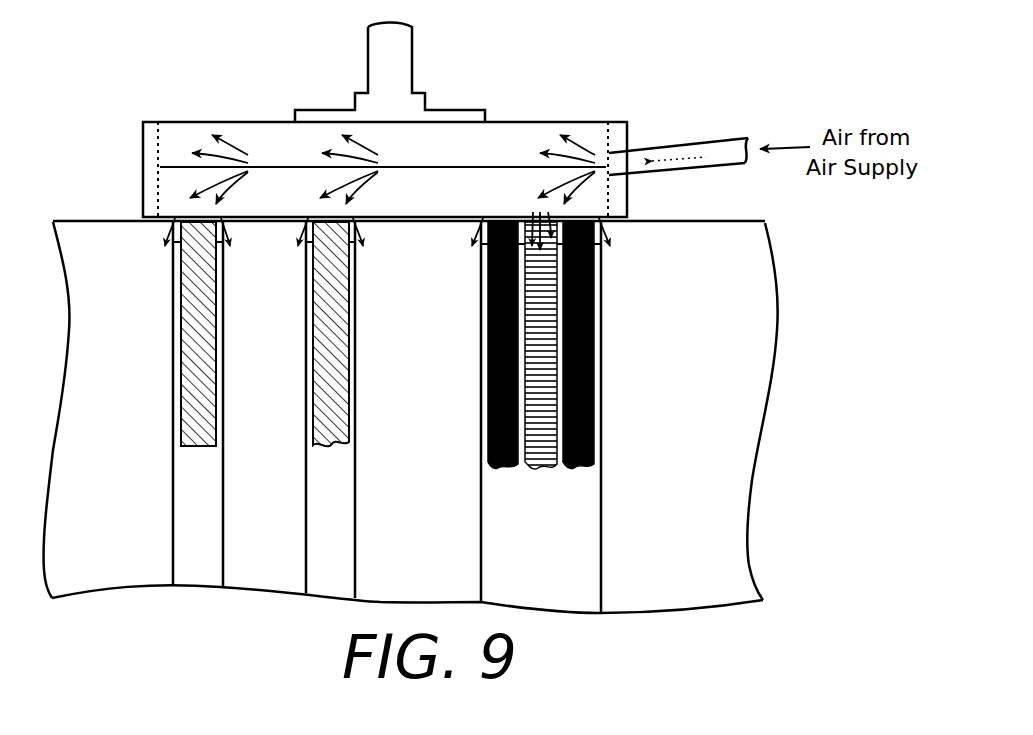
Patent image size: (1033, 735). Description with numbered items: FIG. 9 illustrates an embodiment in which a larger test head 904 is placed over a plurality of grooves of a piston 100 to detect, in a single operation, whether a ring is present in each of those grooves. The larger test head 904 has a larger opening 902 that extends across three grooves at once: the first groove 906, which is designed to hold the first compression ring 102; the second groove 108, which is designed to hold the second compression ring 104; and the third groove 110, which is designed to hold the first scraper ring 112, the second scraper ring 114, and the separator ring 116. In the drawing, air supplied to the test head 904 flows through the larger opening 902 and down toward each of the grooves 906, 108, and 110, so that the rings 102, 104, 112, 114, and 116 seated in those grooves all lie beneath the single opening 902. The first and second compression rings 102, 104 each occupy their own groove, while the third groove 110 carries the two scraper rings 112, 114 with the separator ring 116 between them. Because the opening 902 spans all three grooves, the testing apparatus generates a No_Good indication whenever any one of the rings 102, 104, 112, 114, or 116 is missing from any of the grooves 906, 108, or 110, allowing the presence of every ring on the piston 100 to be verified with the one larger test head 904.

The substrate / wafer block 100 is at (752, 315).
The first compression ring 102 is at (197, 434).
The second compression ring 104 is at (329, 434).
The second groove 108 is at (330, 520).
The third groove 110 is at (510, 562).
The first scraper ring 112 is at (500, 468).
The second scraper ring 114 is at (585, 480).
The separator ring 116 is at (539, 452).
The larger opening 902 is at (489, 143).
The larger test head 904 is at (450, 106).
The first groove 906 is at (203, 530).